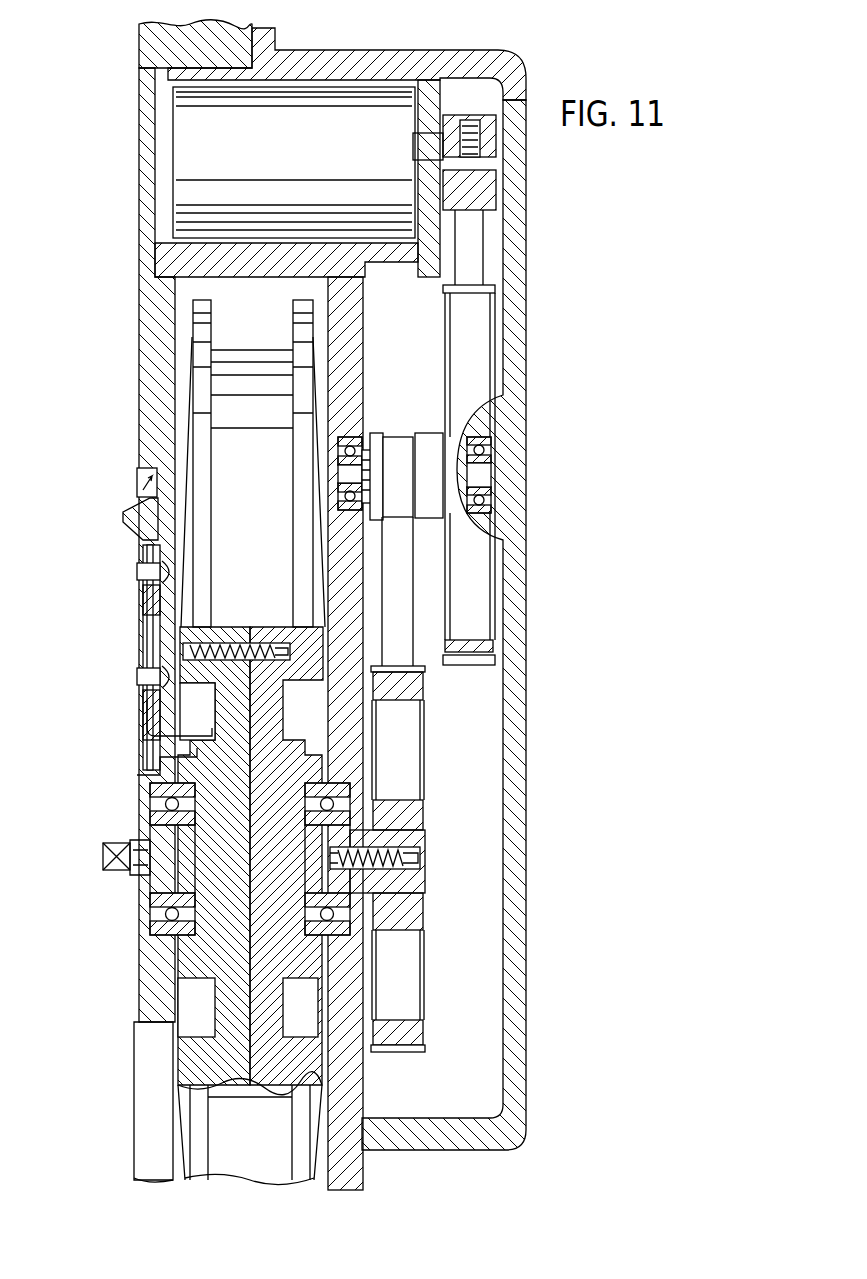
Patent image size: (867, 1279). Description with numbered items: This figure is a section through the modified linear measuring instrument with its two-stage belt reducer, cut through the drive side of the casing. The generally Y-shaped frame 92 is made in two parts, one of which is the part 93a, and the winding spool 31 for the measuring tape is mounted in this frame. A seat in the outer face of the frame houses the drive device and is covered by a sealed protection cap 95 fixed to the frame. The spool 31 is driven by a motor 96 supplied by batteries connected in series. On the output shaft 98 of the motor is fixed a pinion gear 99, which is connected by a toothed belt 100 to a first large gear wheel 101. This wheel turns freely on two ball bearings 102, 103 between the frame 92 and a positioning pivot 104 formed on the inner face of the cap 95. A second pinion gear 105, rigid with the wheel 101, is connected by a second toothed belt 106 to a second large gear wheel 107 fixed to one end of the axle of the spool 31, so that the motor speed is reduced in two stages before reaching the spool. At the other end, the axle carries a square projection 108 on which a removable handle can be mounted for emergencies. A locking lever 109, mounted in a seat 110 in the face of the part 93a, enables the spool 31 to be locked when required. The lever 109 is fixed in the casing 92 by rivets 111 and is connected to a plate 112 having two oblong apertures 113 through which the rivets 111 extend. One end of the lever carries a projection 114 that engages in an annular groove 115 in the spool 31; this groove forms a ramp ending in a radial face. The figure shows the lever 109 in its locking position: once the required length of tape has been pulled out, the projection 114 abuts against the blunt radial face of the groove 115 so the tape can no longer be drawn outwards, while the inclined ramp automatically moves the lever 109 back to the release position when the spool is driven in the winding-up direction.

The frame part 93a is at (158, 48).
The motor 96 is at (190, 148).
The winding spool 31 is at (200, 402).
The seat 110 is at (140, 478).
The locking lever 109 is at (150, 512).
The rivets 111 is at (147, 570).
The oblong apertures 113 is at (148, 600).
The plate 112 is at (148, 640).
The projection 114 is at (150, 770).
The annular groove 115 is at (203, 711).
The square projection 108 is at (110, 866).
The output shaft 98 is at (478, 163).
The pinion gear 99 is at (480, 192).
The toothed belt 100 is at (470, 258).
The ball bearing 103 is at (365, 425).
The first large gear wheel 101 is at (472, 372).
The ball bearing 102 is at (492, 441).
The positioning pivot 104 is at (480, 470).
The second pinion gear 105 is at (395, 490).
The second toothed belt 106 is at (398, 653).
The second large gear wheel 107 is at (400, 745).
The protection cap 95 is at (515, 817).
The frame 92 is at (355, 1172).